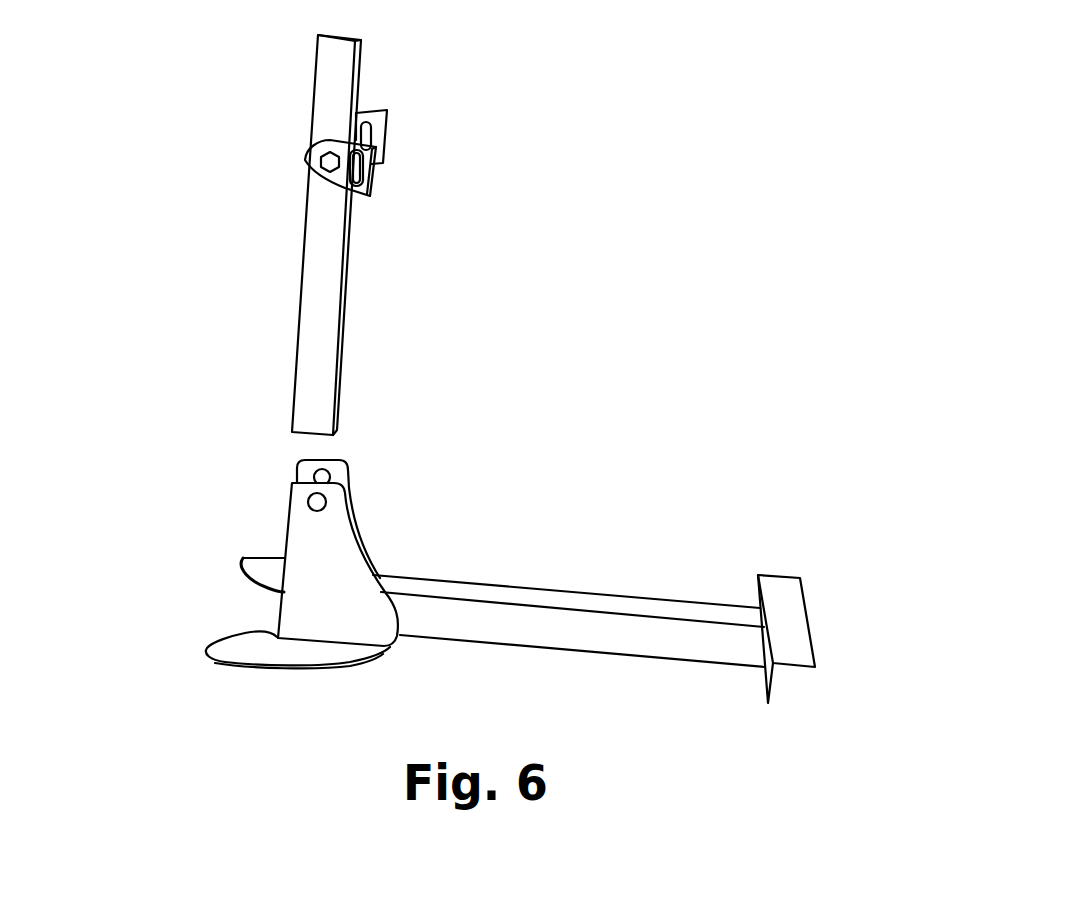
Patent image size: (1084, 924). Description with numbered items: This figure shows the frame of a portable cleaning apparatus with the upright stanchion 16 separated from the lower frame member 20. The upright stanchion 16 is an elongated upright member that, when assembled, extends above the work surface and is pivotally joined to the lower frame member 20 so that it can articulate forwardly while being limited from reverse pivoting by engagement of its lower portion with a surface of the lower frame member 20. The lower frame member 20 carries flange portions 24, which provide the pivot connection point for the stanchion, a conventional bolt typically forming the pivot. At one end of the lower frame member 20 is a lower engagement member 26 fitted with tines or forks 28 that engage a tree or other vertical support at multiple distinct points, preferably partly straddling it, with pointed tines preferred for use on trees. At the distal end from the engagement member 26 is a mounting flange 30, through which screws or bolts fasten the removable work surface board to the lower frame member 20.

The upright stanchion 16 is at (340, 397).
The lower frame member 20 is at (517, 597).
The flange portions 24 is at (290, 485).
The lower engagement member 26 is at (265, 585).
The tines or forks 28 is at (243, 558).
The mounting flange 30 is at (792, 600).